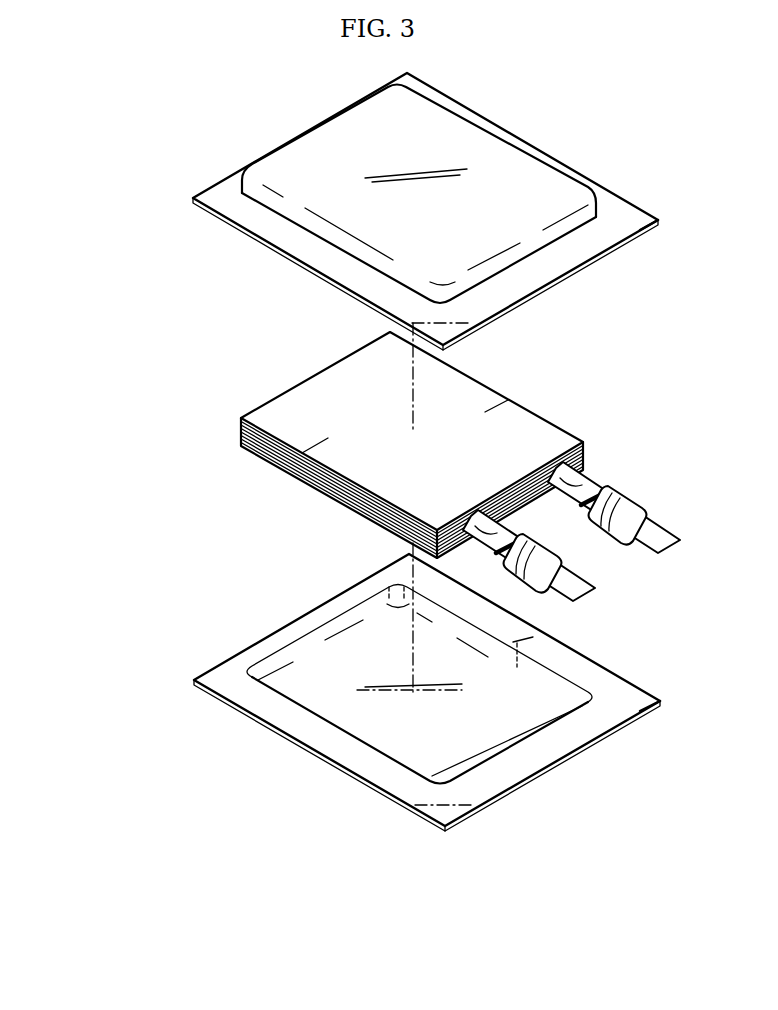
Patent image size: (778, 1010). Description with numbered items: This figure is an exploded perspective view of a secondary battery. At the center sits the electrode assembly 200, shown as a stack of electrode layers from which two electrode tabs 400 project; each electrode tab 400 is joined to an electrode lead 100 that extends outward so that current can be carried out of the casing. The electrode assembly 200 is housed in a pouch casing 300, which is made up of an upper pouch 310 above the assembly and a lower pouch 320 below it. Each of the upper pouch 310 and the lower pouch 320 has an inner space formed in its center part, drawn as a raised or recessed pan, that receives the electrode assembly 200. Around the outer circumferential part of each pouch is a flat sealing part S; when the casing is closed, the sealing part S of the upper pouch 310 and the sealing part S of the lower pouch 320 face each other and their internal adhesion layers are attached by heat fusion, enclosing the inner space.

The electrode lead 100 is at (641, 555).
The electrode assembly 200 is at (530, 428).
The pouch casing 300 is at (91, 366).
The upper pouch 310 is at (214, 207).
The lower pouch 320 is at (227, 688).
The electrode tab 400 is at (583, 478).
The sealing part S is at (626, 208).